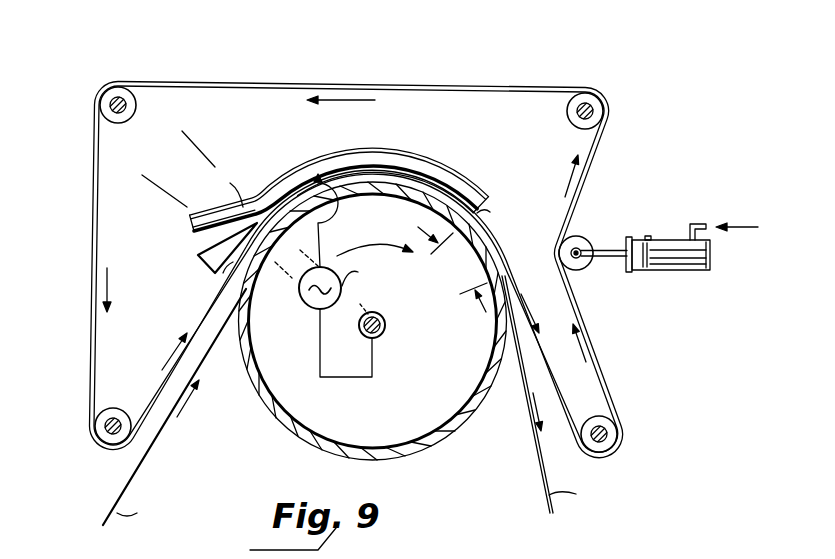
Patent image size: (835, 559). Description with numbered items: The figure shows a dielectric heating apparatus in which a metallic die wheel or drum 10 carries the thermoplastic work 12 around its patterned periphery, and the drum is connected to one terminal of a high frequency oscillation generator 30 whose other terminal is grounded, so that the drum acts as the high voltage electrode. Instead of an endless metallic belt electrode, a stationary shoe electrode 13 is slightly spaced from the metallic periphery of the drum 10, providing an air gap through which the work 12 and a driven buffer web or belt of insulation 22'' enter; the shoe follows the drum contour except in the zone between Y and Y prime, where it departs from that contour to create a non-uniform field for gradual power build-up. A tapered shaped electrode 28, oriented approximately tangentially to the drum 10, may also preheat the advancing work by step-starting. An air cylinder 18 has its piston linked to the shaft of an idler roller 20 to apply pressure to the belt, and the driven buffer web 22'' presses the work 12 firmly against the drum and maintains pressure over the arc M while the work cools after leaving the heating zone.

The drum 10 is at (417, 450).
The work 12 is at (156, 440).
The stationary shoe electrode 13 is at (452, 178).
The air cylinder 18 is at (660, 243).
The idler roller 20 is at (587, 239).
The driven buffer web or belt of insulation 22'' is at (355, 256).
The shaped electrode 28 is at (198, 258).
The high frequency oscillation generator 30 is at (301, 313).